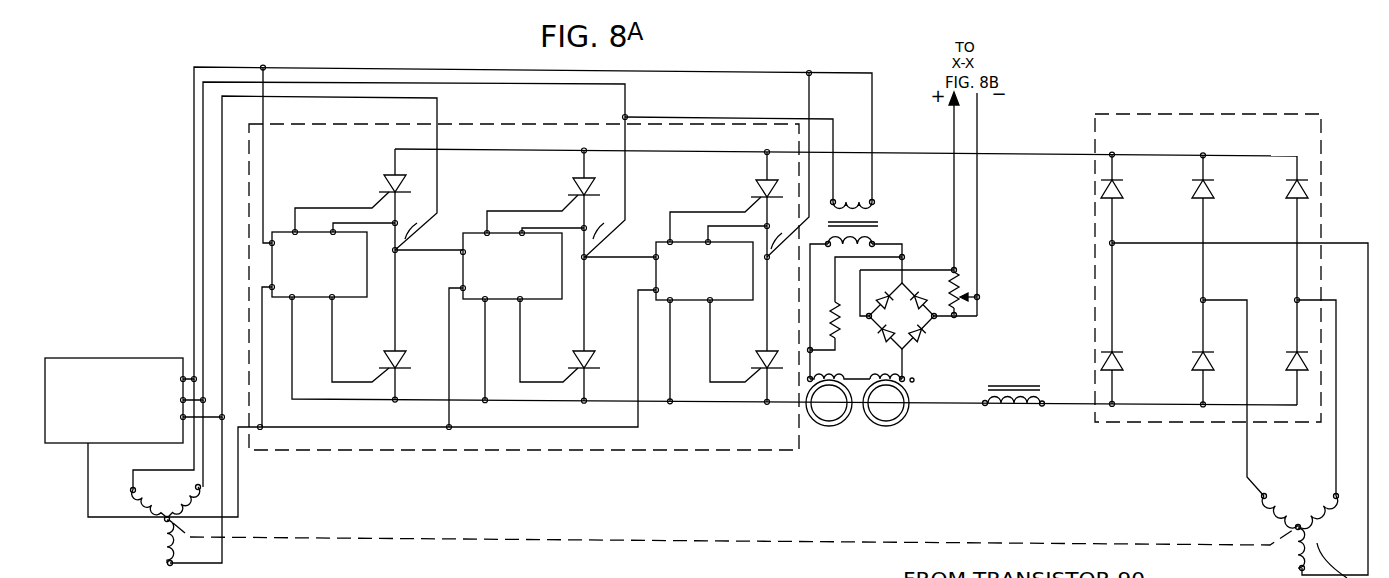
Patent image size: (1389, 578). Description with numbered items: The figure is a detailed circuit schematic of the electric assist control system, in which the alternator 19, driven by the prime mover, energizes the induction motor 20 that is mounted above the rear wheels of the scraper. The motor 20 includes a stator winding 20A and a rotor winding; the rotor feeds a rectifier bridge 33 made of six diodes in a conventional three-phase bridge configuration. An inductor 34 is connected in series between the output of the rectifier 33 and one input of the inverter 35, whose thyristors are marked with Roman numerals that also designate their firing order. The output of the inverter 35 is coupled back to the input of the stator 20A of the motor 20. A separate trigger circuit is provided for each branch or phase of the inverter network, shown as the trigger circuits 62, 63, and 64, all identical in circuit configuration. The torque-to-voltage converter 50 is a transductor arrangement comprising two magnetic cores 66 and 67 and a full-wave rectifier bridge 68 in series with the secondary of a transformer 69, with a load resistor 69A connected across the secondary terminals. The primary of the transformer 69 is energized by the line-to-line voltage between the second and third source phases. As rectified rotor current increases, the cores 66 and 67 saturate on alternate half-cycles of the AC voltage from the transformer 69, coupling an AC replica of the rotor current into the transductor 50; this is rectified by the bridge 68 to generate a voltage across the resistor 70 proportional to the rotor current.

The alternator 19 is at (125, 358).
The induction motor 20 is at (734, 526).
The stator winding 20A is at (140, 525).
The rectifier bridge 33 is at (1168, 148).
The inductor 34 is at (1020, 407).
The inverter 35 is at (524, 112).
The torque-to-voltage converter 50 is at (879, 235).
The trigger circuit 62 is at (366, 298).
The trigger circuit 63 is at (531, 299).
The trigger circuit 64 is at (658, 241).
The magnetic core 66 is at (879, 427).
The magnetic core 67 is at (813, 426).
The full-wave rectifier bridge 68 is at (903, 320).
The transformer 69 is at (916, 231).
The load resistor 69A is at (835, 304).
The resistor 70 is at (972, 280).